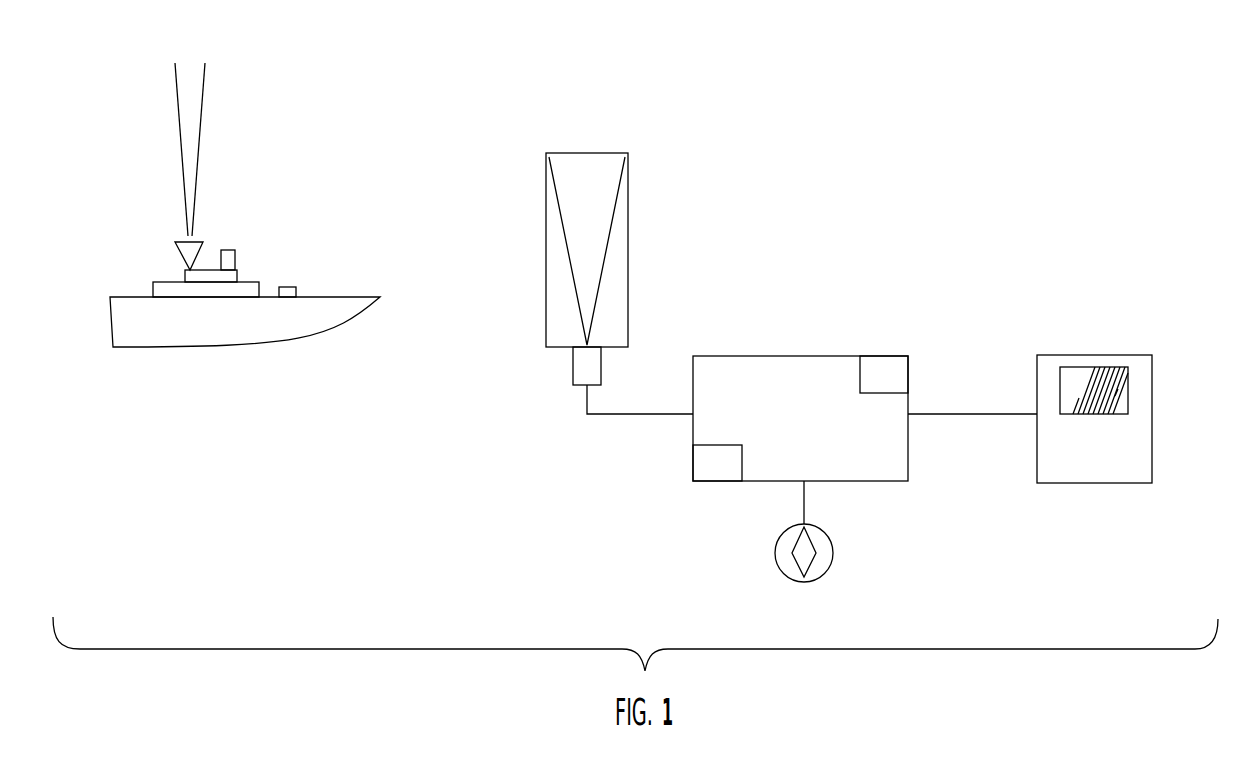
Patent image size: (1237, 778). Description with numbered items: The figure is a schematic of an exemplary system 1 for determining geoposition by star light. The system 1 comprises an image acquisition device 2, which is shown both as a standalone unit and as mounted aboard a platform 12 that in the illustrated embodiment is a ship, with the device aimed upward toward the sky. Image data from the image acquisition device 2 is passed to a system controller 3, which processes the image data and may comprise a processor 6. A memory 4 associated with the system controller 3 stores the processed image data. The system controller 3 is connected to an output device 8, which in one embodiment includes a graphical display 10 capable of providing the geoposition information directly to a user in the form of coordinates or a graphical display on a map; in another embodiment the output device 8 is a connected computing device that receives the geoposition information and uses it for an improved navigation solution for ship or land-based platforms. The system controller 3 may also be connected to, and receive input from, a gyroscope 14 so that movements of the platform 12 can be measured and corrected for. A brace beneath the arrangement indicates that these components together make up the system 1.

The system 1 is at (540, 552).
The image acquisition device 2 is at (175, 248).
The system controller 3 is at (769, 353).
The memory 4 is at (885, 373).
The processor 6 is at (717, 470).
The output device 8 is at (1157, 380).
The graphical display 10 is at (1078, 375).
The platform 12 is at (268, 270).
The gyroscope 14 is at (833, 565).